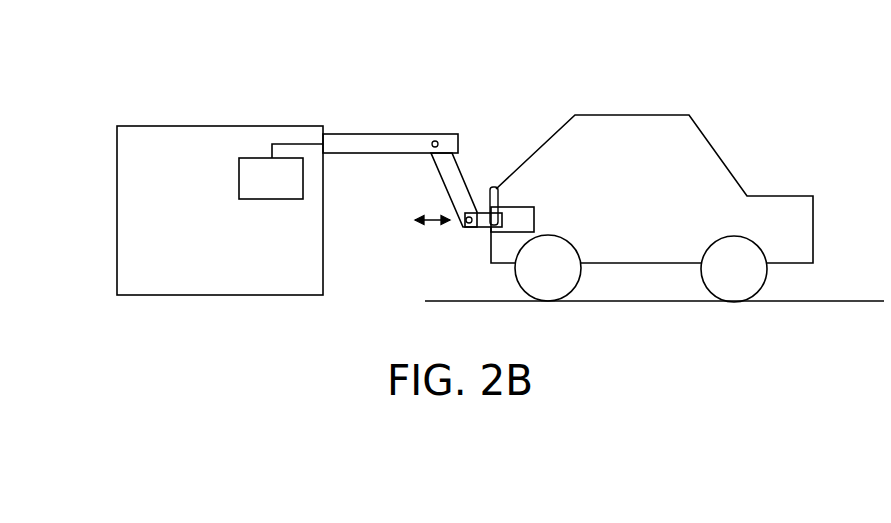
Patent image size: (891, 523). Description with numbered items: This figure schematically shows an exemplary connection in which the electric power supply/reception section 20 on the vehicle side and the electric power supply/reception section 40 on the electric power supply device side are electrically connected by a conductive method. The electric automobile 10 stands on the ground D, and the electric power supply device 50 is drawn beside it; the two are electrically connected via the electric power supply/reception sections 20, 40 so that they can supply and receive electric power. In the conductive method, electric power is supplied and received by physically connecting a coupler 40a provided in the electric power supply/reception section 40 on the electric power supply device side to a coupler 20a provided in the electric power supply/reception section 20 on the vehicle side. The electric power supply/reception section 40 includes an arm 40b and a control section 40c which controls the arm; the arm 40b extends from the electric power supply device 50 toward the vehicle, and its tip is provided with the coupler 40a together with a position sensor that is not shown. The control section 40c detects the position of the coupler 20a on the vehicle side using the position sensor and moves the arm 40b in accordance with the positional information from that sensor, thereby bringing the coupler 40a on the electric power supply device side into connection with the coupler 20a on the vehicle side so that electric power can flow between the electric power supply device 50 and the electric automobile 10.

The electric automobile 10 is at (603, 115).
The electric power supply/reception section on the vehicle side 20 is at (530, 208).
The coupler on the vehicle side 20a is at (493, 187).
The electric power supply/reception section on the electric power supply device side 40 is at (408, 134).
The coupler on the electric power supply device side 40a is at (480, 227).
The arm 40b is at (457, 202).
The control section 40c is at (252, 158).
The electric power supply device 50 is at (195, 126).
The ground D is at (857, 301).